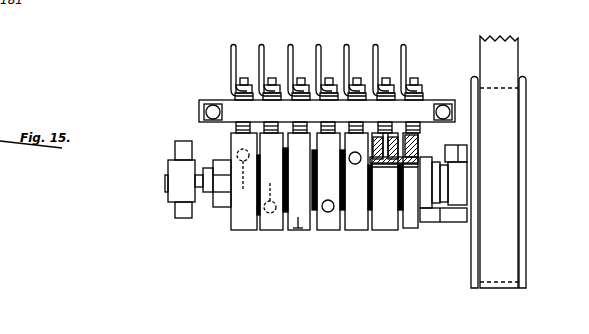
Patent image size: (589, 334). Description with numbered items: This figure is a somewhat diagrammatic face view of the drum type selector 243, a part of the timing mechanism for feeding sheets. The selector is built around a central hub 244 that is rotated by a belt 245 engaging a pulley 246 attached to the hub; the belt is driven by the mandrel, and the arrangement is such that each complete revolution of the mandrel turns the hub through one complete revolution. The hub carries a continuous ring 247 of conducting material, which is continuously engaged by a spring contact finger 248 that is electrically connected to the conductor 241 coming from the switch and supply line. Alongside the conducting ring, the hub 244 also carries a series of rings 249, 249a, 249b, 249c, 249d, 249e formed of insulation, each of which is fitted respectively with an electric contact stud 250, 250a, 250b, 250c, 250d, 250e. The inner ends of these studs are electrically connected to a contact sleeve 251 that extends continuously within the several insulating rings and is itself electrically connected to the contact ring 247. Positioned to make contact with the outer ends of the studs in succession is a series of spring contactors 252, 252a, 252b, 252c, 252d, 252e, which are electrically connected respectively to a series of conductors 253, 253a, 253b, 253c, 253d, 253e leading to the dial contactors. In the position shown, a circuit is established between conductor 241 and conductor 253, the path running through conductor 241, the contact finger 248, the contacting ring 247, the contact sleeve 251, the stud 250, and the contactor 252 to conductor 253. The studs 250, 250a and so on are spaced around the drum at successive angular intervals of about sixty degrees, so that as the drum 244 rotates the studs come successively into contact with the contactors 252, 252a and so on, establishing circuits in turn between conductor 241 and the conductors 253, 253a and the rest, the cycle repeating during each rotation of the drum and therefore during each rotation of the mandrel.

The conductor 241 is at (407, 60).
The drum type selector 243 is at (224, 96).
The central hub 244 is at (436, 210).
The belt 245 is at (508, 54).
The pulley 246 is at (526, 93).
The continuous ring of conducting material 247 is at (410, 225).
The spring contact finger 248 is at (418, 132).
The ring of insulation 249 is at (388, 230).
The ring of insulation 249a is at (361, 230).
The ring of insulation 249b is at (330, 230).
The ring of insulation 249c is at (290, 230).
The ring of insulation 249d is at (268, 230).
The ring of insulation 249e is at (243, 222).
The electric contact stud 250 is at (386, 165).
The electric contact stud 250a is at (355, 164).
The electric contact stud 250b is at (329, 200).
The electric contact stud 250c is at (304, 215).
The electric contact stud 250d is at (277, 191).
The electric contact stud 250e is at (247, 173).
The contact sleeve 251 is at (420, 153).
The spring contactor 252 is at (390, 123).
The spring contactor 252a is at (358, 124).
The spring contactor 252b is at (329, 124).
The spring contactor 252c is at (300, 124).
The spring contactor 252d is at (275, 119).
The spring contactor 252e is at (236, 128).
The conductor 253 is at (377, 52).
The conductor 253a is at (348, 50).
The conductor 253b is at (320, 48).
The conductor 253c is at (291, 47).
The conductor 253d is at (262, 46).
The conductor 253e is at (252, 32).